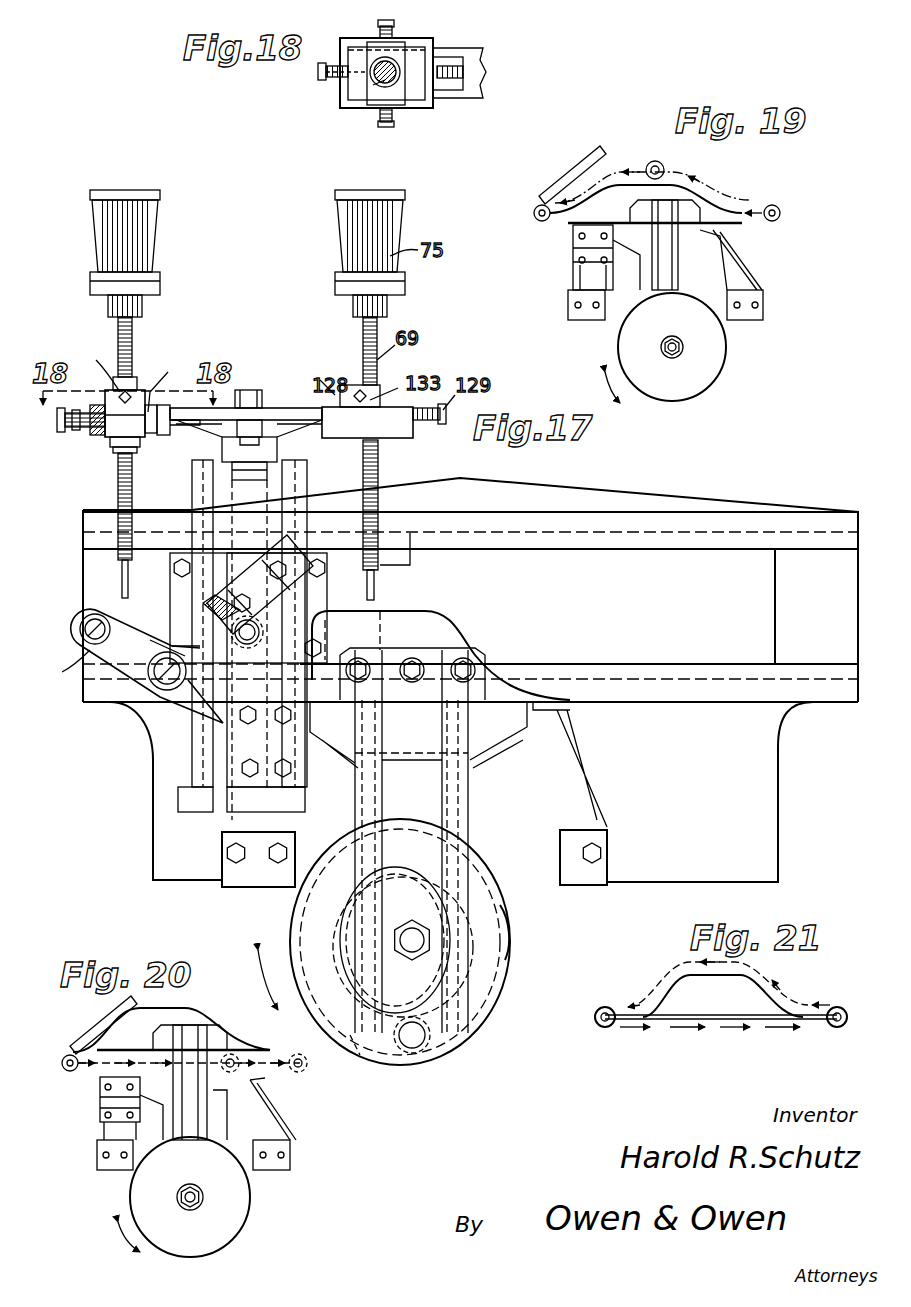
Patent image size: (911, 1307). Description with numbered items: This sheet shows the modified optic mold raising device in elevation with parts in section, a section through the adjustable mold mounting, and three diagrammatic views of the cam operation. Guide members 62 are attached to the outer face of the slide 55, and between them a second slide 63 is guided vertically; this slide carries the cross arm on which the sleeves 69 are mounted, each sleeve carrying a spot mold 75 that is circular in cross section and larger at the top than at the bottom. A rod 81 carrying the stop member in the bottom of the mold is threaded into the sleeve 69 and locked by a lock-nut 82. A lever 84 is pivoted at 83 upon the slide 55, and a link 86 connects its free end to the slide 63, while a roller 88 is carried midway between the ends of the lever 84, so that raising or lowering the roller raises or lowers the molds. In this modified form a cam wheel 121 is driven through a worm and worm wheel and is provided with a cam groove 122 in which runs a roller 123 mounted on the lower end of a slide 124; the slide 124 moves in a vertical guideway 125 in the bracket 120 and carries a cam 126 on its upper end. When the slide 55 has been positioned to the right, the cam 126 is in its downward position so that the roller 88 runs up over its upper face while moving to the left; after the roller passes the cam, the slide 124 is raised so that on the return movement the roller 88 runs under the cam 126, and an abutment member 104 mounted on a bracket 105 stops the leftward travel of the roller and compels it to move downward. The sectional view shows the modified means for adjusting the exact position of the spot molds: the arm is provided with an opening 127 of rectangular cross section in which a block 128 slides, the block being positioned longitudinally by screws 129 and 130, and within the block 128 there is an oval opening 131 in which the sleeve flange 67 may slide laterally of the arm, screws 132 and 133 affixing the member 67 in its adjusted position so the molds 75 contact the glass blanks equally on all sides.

In FIG. 17, the slide 55 is at (378, 600).
In FIG. 17, the guide members 62 is at (298, 485).
In FIG. 17, the slide 63 is at (280, 470).
In FIG. 18, the flange 67 is at (378, 62).
In FIG. 17, the sleeve 69 is at (132, 350).
In FIG. 17, the mold proper 75 is at (150, 244).
In FIG. 17, the rod 81 is at (122, 584).
In FIG. 17, the lock-nut 82 is at (118, 565).
In FIG. 17, the pivot 83 is at (80, 630).
In FIG. 17, the lever 84 is at (66, 667).
In FIG. 17, the link 86 is at (250, 648).
In FIG. 17, the roller 88 is at (170, 690).
In FIG. 19, the roller 88 is at (778, 218).
In FIG. 20, the roller 88 is at (66, 1072).
In FIG. 21, the roller 88 is at (838, 1012).
In FIG. 17, the abutment member 104 is at (190, 635).
In FIG. 19, the abutment member 104 is at (608, 160).
In FIG. 20, the abutment member 104 is at (112, 1018).
In FIG. 17, the bracket 105 is at (250, 578).
In FIG. 17, the bracket 120 is at (510, 900).
In FIG. 17, the cam wheel 121 is at (490, 1000).
In FIG. 19, the cam wheel 121 is at (712, 370).
In FIG. 20, the cam wheel 121 is at (245, 1210).
In FIG. 17, the cam groove 122 is at (352, 1050).
In FIG. 17, the roller 123 is at (414, 1050).
In FIG. 17, the slide 124 is at (440, 735).
In FIG. 19, the slide 124 is at (678, 243).
In FIG. 20, the slide 124 is at (178, 1072).
In FIG. 17, the vertical guideway 125 is at (468, 812).
In FIG. 19, the vertical guideway 125 is at (692, 285).
In FIG. 20, the vertical guideway 125 is at (210, 1128).
In FIG. 17, the cam 126 is at (447, 636).
In FIG. 19, the cam 126 is at (670, 190).
In FIG. 20, the cam 126 is at (176, 1018).
In FIG. 17, the opening 127 is at (152, 437).
In FIG. 18, the opening 127 is at (410, 95).
In FIG. 17, the block 128 is at (125, 430).
In FIG. 18, the block 128 is at (370, 90).
In FIG. 17, the screw 129 is at (72, 425).
In FIG. 18, the screw 129 is at (320, 70).
In FIG. 17, the screw 130 is at (176, 382).
In FIG. 18, the screw 130 is at (448, 66).
In FIG. 18, the oval opening 131 is at (380, 92).
In FIG. 18, the screw 132 is at (392, 26).
In FIG. 17, the screw 133 is at (97, 368).
In FIG. 18, the screw 133 is at (388, 125).